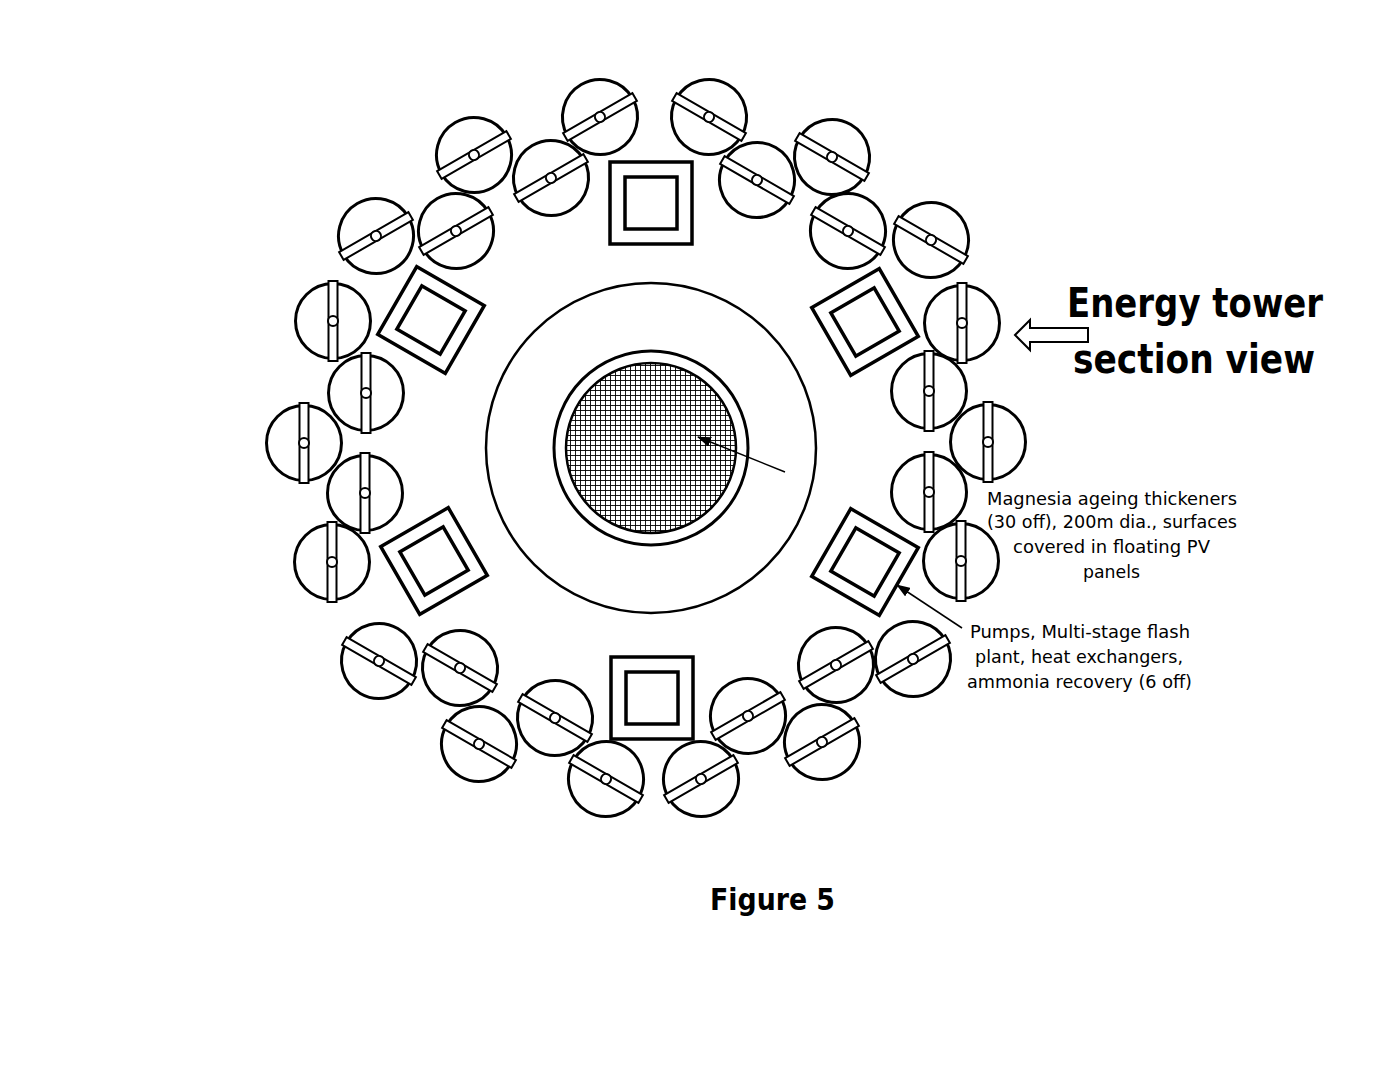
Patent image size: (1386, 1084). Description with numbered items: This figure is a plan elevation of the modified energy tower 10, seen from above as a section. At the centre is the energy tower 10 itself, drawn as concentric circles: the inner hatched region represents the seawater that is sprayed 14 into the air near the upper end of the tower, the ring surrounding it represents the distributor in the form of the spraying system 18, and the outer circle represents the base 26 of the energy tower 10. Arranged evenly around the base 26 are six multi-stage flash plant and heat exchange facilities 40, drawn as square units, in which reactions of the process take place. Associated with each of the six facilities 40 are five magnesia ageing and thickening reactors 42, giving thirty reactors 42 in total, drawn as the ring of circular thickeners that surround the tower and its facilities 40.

The energy tower 10 is at (599, 448).
The sprayed seawater 14 is at (649, 450).
The spraying system 18 is at (552, 459).
The base of the energy tower 26 is at (747, 308).
The multi-stage flash plant and heat exchange facilities 40 is at (643, 693).
The magnesia ageing and thickening reactors 42 is at (407, 157).